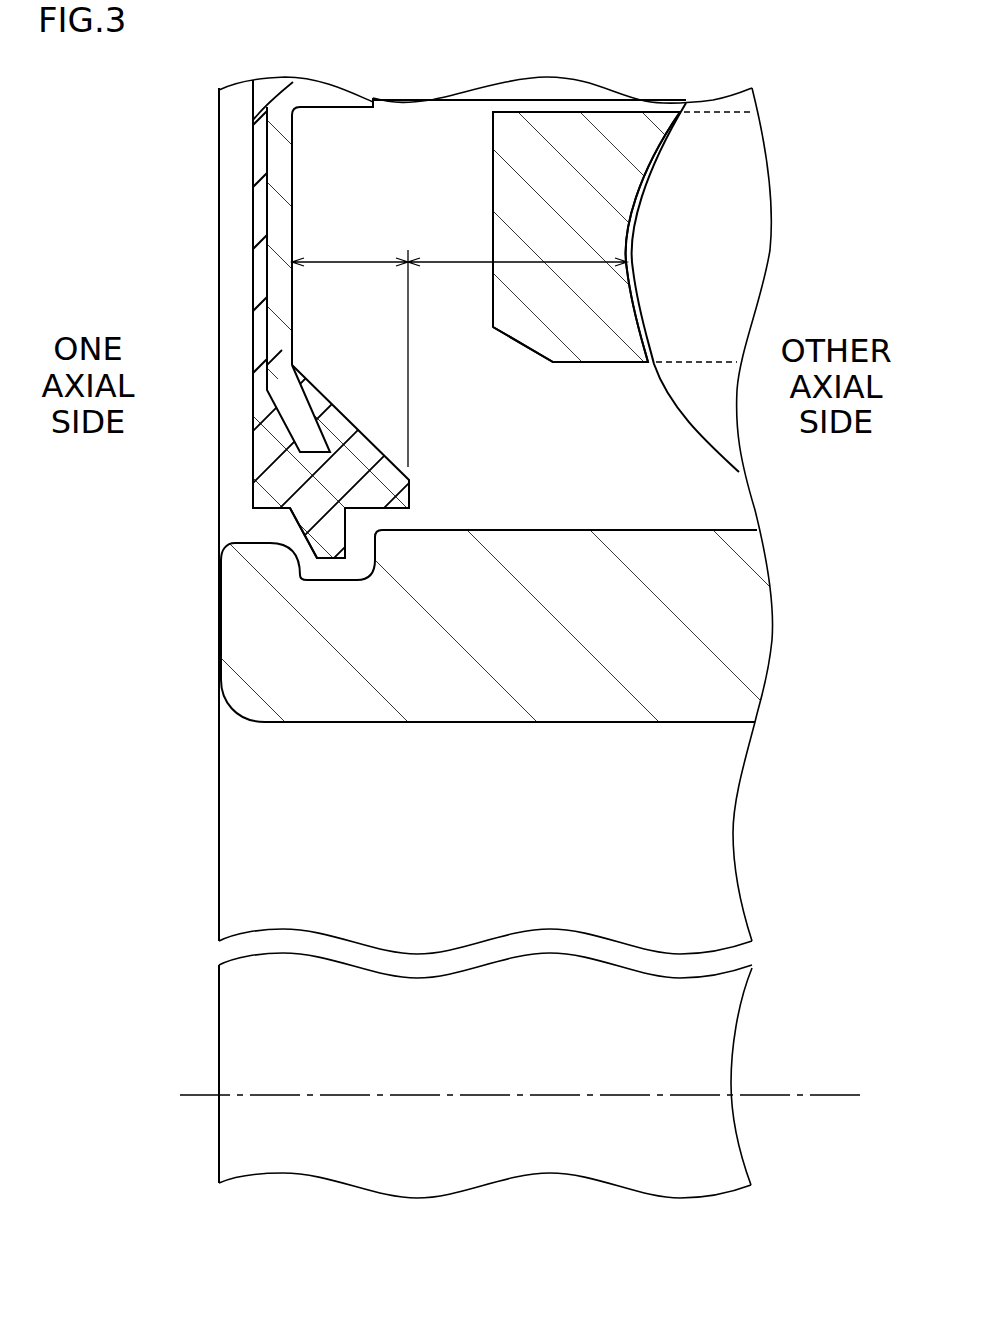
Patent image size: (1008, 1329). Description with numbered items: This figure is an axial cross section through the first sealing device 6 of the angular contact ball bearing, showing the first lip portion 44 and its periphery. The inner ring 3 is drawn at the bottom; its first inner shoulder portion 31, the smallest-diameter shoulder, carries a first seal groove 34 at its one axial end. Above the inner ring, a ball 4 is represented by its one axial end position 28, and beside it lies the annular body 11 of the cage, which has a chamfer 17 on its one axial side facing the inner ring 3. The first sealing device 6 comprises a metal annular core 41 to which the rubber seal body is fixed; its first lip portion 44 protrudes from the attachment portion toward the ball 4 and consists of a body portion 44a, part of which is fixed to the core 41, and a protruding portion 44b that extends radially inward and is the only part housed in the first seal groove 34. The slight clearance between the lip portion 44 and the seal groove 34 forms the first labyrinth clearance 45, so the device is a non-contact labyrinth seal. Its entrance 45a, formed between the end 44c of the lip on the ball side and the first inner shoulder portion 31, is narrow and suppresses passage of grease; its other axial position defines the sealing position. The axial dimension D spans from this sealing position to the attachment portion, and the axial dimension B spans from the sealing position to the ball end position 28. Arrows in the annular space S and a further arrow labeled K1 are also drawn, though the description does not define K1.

The inner ring 3 is at (678, 680).
The first inner shoulder portion 31 is at (550, 650).
The first seal groove 34 is at (275, 523).
The ball 4 is at (695, 395).
The annular body 11 is at (495, 172).
The chamfer 17 is at (513, 338).
The one axial end position of the ball 28 is at (625, 250).
The first sealing device 6 is at (242, 280).
The annular core 41 is at (278, 200).
The first lip portion 44 is at (359, 409).
The body portion 44a is at (290, 470).
The protruding portion 44b is at (330, 527).
The end of the first lip portion 44c is at (410, 485).
The first labyrinth clearance 45 is at (431, 515).
The entrance of the first labyrinth clearance 45a is at (408, 520).
The annular space S is at (311, 141).
The gap K1 is at (347, 175).
The axial dimension D is at (350, 350).
The axial dimension B is at (517, 249).